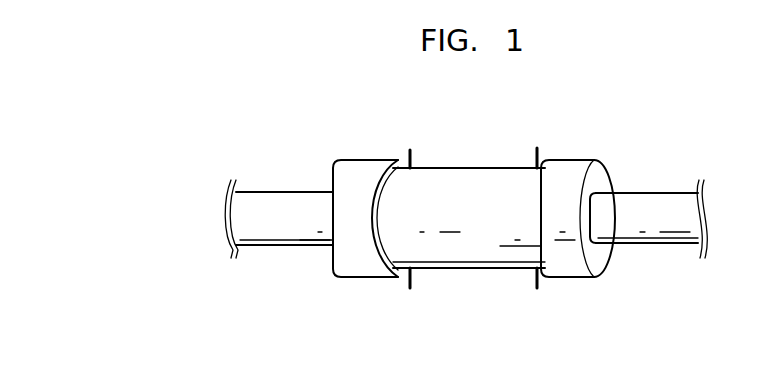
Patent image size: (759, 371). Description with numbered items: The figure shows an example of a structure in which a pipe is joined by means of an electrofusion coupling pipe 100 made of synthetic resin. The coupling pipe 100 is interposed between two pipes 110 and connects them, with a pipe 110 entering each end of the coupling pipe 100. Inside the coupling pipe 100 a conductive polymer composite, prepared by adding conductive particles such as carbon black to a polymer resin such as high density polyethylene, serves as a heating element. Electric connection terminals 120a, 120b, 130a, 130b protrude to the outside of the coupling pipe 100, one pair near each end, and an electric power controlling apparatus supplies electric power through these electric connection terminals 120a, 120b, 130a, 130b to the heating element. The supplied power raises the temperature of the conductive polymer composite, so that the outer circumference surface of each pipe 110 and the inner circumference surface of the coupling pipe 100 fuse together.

The electrofusion coupling pipe 100 is at (613, 158).
The pipe 110 is at (283, 192).
The electric connection terminal 120a is at (408, 150).
The electric connection terminal 120b is at (408, 288).
The electric connection terminal 130a is at (539, 152).
The electric connection terminal 130b is at (539, 288).